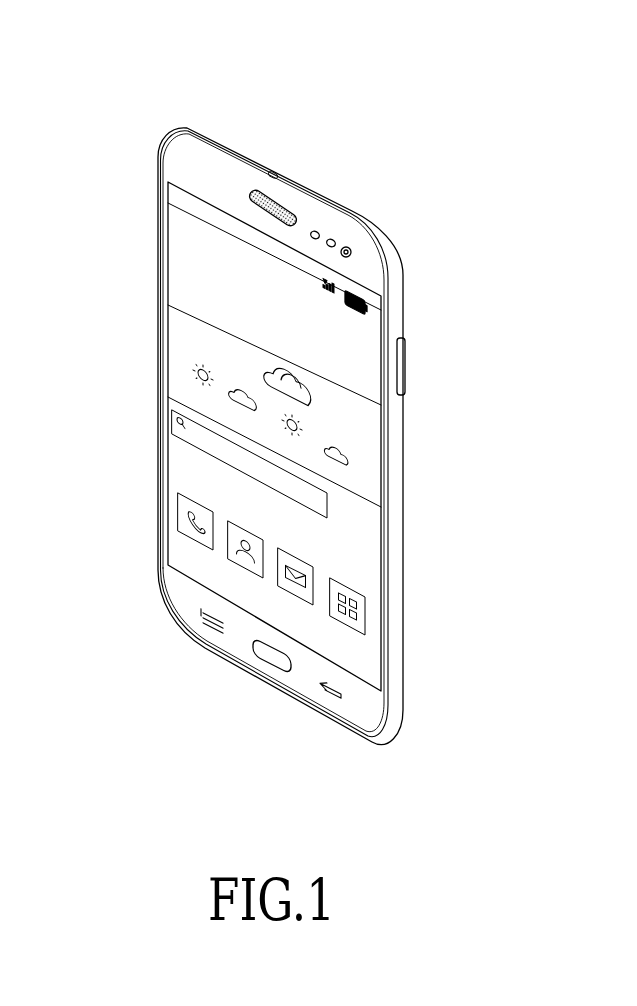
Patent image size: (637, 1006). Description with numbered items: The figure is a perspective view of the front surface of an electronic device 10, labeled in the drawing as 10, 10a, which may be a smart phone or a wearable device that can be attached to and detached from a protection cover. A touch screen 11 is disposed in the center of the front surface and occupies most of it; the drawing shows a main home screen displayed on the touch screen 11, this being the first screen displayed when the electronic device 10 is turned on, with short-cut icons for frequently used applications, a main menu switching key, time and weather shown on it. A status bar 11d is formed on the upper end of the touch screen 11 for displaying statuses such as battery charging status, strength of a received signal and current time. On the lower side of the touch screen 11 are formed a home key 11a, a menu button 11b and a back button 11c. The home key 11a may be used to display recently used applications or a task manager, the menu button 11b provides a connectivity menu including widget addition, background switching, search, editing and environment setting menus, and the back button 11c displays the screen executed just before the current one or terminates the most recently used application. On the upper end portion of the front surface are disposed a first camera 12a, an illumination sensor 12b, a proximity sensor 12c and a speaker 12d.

The electronic device 10 is at (130, 92).
The mobile phone 10a is at (281, 436).
The touch screen 11 is at (178, 362).
The home key 11a is at (275, 657).
The menu button 11b is at (203, 613).
The back button 11c is at (336, 692).
The status bar 11d is at (178, 203).
The first camera 12a is at (346, 247).
The illumination sensor 12b is at (331, 239).
The proximity sensor 12c is at (315, 231).
The speaker 12d is at (250, 191).